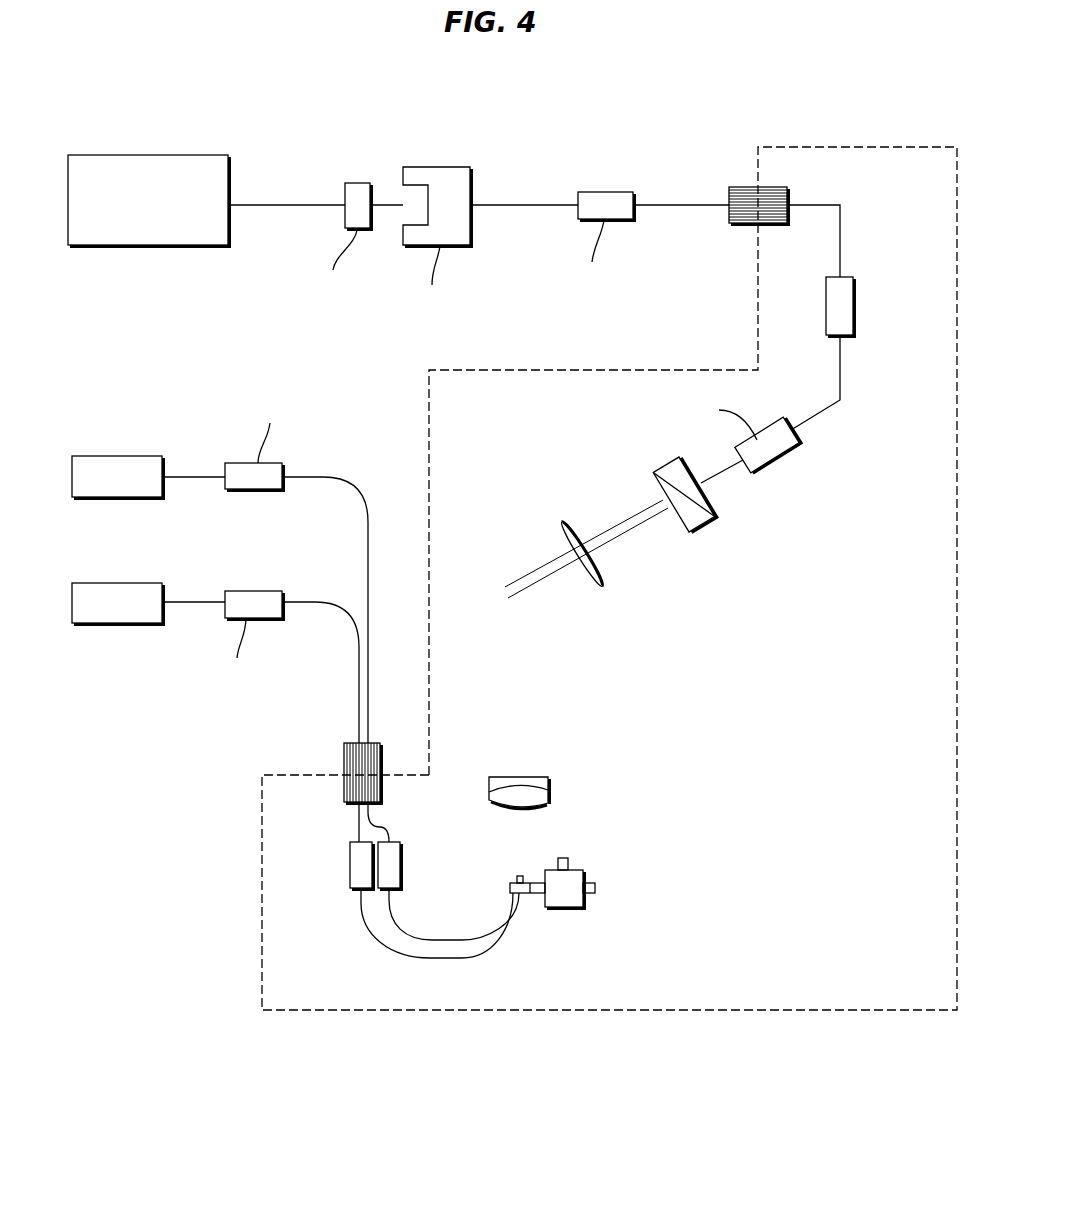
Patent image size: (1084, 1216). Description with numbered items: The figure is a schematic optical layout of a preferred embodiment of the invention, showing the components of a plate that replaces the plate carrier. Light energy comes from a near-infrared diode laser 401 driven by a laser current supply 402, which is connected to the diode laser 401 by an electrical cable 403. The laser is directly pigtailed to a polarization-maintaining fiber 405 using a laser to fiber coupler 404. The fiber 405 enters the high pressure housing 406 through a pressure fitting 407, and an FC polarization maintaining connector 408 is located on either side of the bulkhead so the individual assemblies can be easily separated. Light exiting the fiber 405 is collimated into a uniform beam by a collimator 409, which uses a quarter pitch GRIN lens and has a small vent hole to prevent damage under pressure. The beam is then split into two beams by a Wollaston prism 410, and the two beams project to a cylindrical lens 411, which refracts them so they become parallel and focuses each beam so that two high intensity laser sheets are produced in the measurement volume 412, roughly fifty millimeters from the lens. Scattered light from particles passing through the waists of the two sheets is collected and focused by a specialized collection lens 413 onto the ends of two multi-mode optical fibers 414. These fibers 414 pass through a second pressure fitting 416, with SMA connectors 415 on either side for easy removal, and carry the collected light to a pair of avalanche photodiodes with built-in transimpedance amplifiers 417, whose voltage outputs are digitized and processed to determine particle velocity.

The diode laser 401 is at (357, 183).
The laser current supply 402 is at (117, 155).
The electrical cable 403 is at (283, 205).
The laser to fiber coupler 404 is at (440, 167).
The polarization-maintaining fiber 405 is at (511, 205).
The high pressure housing 406 is at (885, 147).
The pressure fitting 407 is at (772, 187).
The FC polarization maintaining connector 408 is at (607, 192).
The collimator 409 is at (778, 463).
The Wollaston prism 410 is at (706, 528).
The cylindrical lens 411 is at (601, 583).
The measurement volume 412 is at (503, 583).
The collection lens 413 is at (551, 789).
The multi-mode optical fibers 414 is at (303, 477).
The SMA 905 connectors 415 is at (245, 489).
The second pressure fitting 416 is at (344, 753).
The avalanche photodiodes with built-in transimpedance amplifiers 417 is at (112, 456).